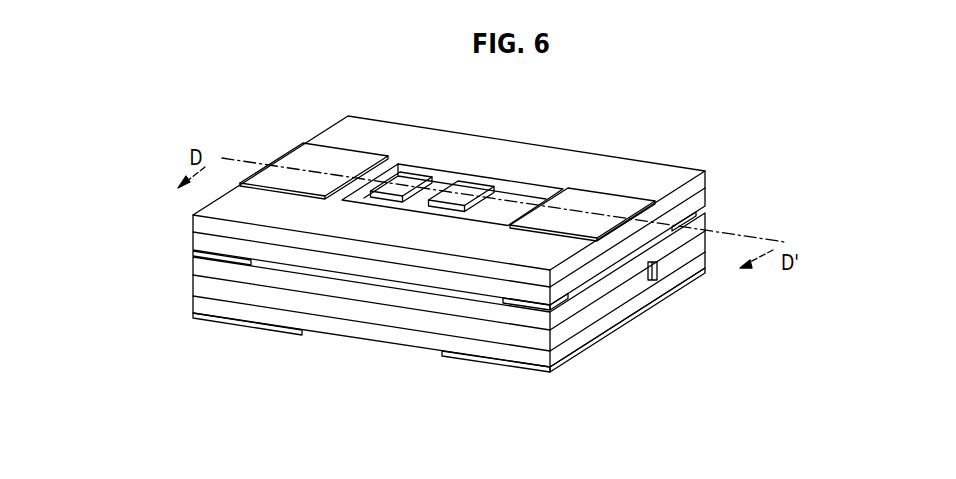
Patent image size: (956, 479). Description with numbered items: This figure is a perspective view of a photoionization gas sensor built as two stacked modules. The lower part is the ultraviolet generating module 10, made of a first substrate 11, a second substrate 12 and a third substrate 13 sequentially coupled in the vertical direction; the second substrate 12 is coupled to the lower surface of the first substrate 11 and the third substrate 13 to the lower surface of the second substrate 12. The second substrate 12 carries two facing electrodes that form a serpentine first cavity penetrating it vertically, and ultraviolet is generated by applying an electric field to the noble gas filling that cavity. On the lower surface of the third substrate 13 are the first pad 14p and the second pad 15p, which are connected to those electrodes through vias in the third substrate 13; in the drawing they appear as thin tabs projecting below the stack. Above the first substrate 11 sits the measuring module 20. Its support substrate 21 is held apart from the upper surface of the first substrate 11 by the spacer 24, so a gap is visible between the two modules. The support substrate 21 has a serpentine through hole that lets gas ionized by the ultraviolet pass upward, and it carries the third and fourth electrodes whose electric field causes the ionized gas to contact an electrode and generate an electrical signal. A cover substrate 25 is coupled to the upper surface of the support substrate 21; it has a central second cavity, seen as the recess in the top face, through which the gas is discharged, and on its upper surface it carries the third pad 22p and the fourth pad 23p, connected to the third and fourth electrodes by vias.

The ultraviolet generating module 10 is at (440, 339).
The first substrate 11 is at (270, 283).
The second substrate 12 is at (320, 305).
The third substrate 13 is at (367, 327).
The first pad 14p is at (224, 322).
The second pad 15p is at (508, 372).
The measuring module 20 is at (388, 213).
The support substrate 21 is at (193, 242).
The third pad 22p is at (295, 163).
The fourth pad 23p is at (620, 200).
The spacer 24 is at (215, 261).
The cover substrate 25 is at (193, 218).